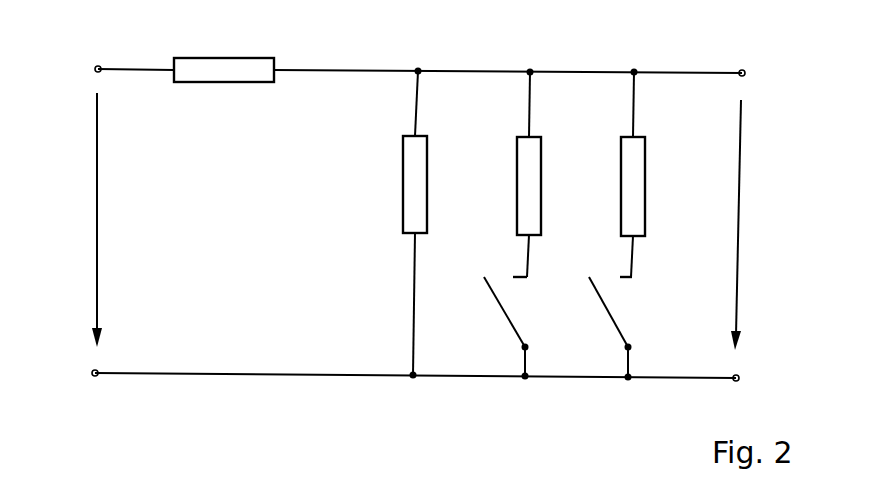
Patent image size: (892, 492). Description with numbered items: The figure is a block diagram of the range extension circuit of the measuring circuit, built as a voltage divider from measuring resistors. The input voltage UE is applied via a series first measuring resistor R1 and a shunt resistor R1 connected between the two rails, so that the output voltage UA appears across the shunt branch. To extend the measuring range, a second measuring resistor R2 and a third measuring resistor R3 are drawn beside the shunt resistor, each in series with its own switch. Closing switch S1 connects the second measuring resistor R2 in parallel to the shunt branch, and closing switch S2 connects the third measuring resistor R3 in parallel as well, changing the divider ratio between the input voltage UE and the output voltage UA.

The first measuring resistor R1 is at (316, 199).
The second measuring resistor R2 is at (543, 174).
The third measuring resistor R3 is at (645, 174).
The switch S1 is at (520, 326).
The switch S2 is at (622, 327).
The input voltage UE is at (84, 220).
The output voltage UA is at (751, 225).